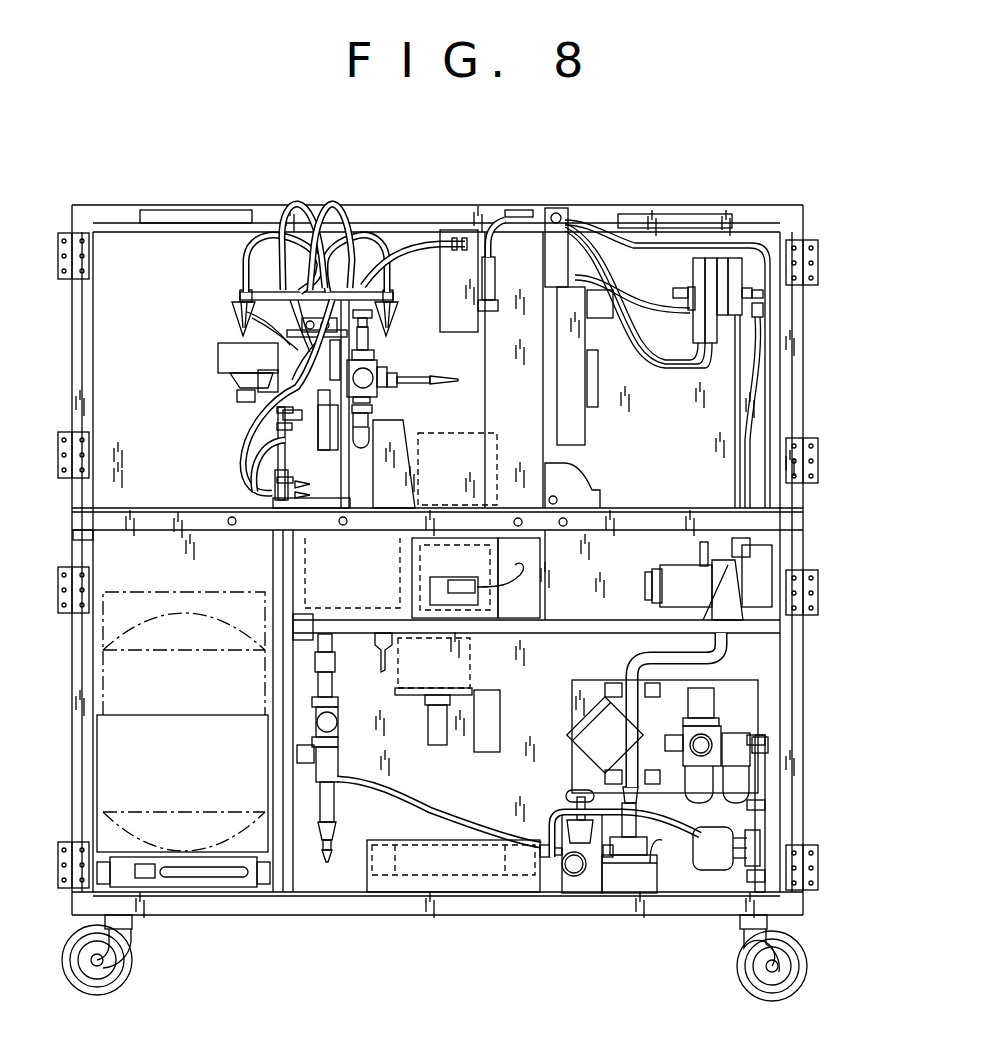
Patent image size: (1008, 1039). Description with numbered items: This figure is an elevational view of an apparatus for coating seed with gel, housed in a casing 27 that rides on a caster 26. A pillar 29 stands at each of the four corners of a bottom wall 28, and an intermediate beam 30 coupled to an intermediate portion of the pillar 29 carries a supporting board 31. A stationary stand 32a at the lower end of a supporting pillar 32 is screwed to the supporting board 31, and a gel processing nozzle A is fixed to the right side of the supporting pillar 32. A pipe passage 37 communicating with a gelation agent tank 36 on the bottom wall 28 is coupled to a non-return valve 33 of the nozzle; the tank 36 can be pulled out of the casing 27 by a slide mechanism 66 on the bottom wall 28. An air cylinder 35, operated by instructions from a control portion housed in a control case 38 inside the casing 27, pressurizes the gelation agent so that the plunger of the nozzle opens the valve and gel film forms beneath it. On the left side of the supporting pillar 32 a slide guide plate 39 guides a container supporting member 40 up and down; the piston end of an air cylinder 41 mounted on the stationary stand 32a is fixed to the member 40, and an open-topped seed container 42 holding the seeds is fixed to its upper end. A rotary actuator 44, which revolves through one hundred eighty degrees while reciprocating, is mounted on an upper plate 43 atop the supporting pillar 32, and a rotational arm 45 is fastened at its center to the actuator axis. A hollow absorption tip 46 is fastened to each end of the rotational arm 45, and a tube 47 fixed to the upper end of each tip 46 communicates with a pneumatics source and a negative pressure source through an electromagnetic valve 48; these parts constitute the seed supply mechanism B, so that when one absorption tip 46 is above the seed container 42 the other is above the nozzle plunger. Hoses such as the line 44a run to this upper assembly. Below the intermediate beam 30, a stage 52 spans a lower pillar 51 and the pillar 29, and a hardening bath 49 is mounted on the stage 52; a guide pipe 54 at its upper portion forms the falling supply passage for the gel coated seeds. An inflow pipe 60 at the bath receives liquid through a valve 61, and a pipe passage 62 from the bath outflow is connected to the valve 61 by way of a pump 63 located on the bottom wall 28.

The caster 26 is at (807, 964).
The casing 27 is at (797, 808).
The bottom wall 28 is at (790, 905).
The pillar 29 is at (786, 718).
The intermediate beam 30 is at (743, 523).
The supporting board 31 is at (238, 512).
The supporting pillar 32 is at (293, 448).
The stationary stand 32a is at (262, 463).
The non-return valve 33 is at (375, 360).
The air cylinder 35 is at (277, 337).
The gelation agent tank 36 is at (127, 747).
The pipe passage 37 is at (273, 370).
The control case 38 is at (587, 430).
The slide guide plate 39 is at (340, 458).
The container supporting member 40 is at (267, 393).
The air cylinder 41 is at (282, 400).
The seed container 42 is at (233, 350).
The upper plate 43 is at (240, 300).
The rotary actuator 44 is at (243, 298).
The hose loop 44a is at (283, 240).
The rotational arm 45 is at (365, 297).
The hollow absorption tip 46 is at (243, 303).
The tube 47 is at (333, 207).
The electromagnetic valve 48 is at (488, 262).
The hardening bath 49 is at (637, 572).
The lower pillar 51 is at (277, 623).
The stage 52 is at (770, 628).
The guide pipe 54 is at (393, 467).
The inflow pipe 60 is at (186, 715).
The valve 61 is at (313, 717).
The pipe passage 62 is at (718, 655).
The pump 63 is at (587, 890).
The slide mechanism 66 is at (230, 887).
The gel processing nozzle A is at (415, 403).
The seed supply mechanism B is at (213, 237).